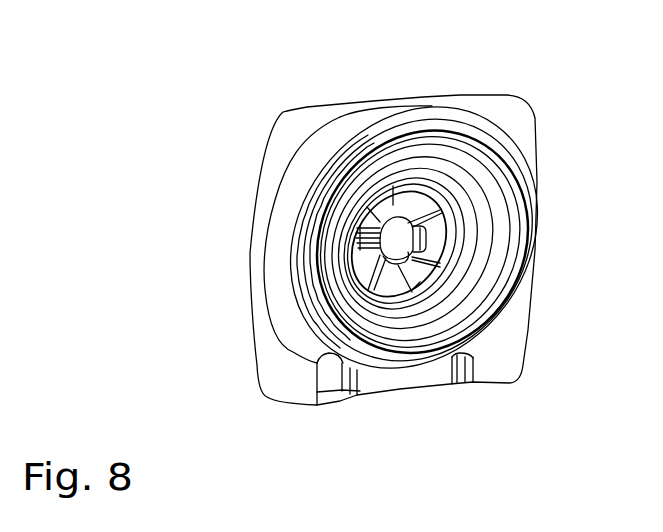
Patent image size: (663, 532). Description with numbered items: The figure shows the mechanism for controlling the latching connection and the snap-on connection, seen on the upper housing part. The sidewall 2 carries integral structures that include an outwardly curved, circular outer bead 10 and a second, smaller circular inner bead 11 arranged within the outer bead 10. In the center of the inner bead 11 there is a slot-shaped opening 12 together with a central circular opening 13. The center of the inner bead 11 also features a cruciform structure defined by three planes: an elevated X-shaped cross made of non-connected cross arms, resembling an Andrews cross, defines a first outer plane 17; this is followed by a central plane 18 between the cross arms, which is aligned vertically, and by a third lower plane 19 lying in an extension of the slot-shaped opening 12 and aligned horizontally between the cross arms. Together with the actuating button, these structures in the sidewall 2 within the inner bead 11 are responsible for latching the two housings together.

The sidewall 2 is at (300, 130).
The outer bead 10 is at (520, 224).
The inner bead 11 is at (460, 287).
The slot-shaped opening 12 is at (372, 252).
The central circular opening 13 is at (365, 206).
The first outer plane 17 is at (425, 207).
The central plane 18 is at (393, 205).
The third lower plane 19 is at (447, 193).